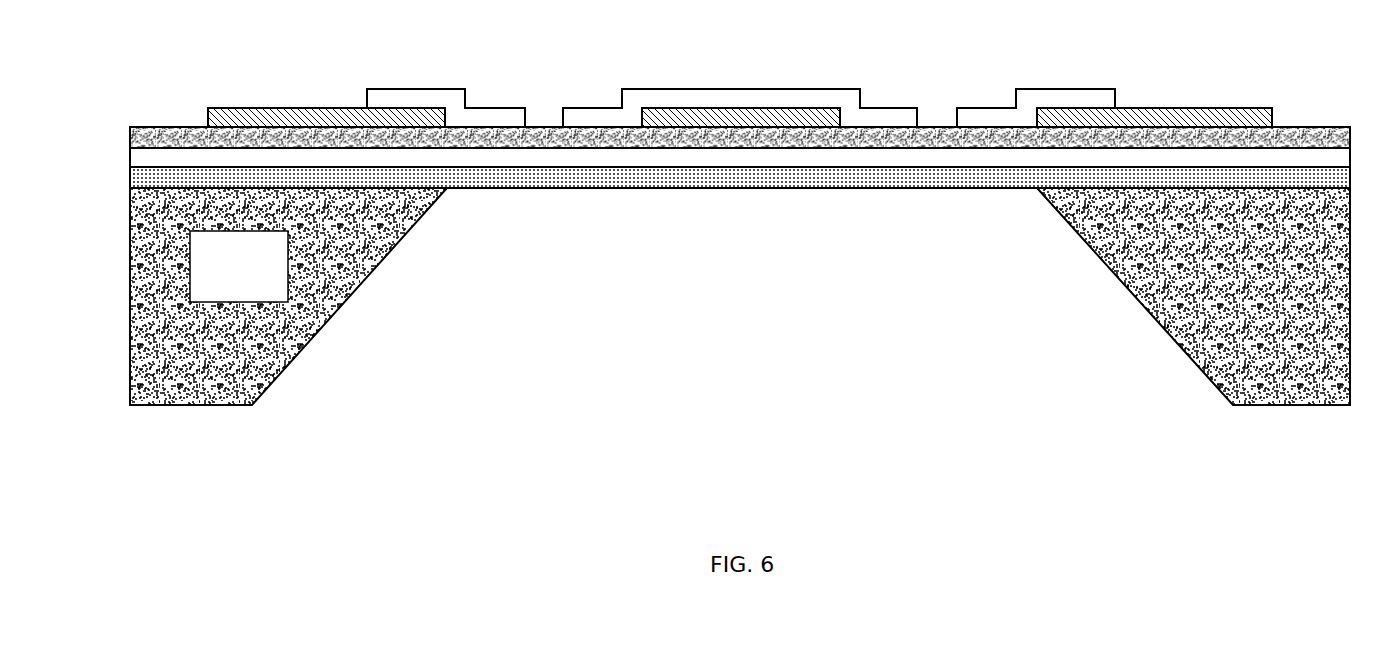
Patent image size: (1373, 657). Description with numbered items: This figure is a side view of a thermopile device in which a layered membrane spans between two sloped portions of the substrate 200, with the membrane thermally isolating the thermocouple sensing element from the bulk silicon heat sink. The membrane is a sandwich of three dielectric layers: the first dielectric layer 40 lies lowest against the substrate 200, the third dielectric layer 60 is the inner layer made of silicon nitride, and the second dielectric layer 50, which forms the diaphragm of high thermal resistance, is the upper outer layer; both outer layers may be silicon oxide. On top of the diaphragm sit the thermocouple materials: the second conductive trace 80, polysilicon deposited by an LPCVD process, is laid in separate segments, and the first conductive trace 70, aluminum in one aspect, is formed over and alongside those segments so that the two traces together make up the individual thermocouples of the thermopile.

The first dielectric layer 40 is at (138, 180).
The second dielectric layer 50 is at (145, 138).
The third dielectric layer 60 is at (140, 158).
The first conductive trace 70 is at (386, 99).
The second conductive trace 80 is at (208, 108).
The substrate 200 is at (226, 277).